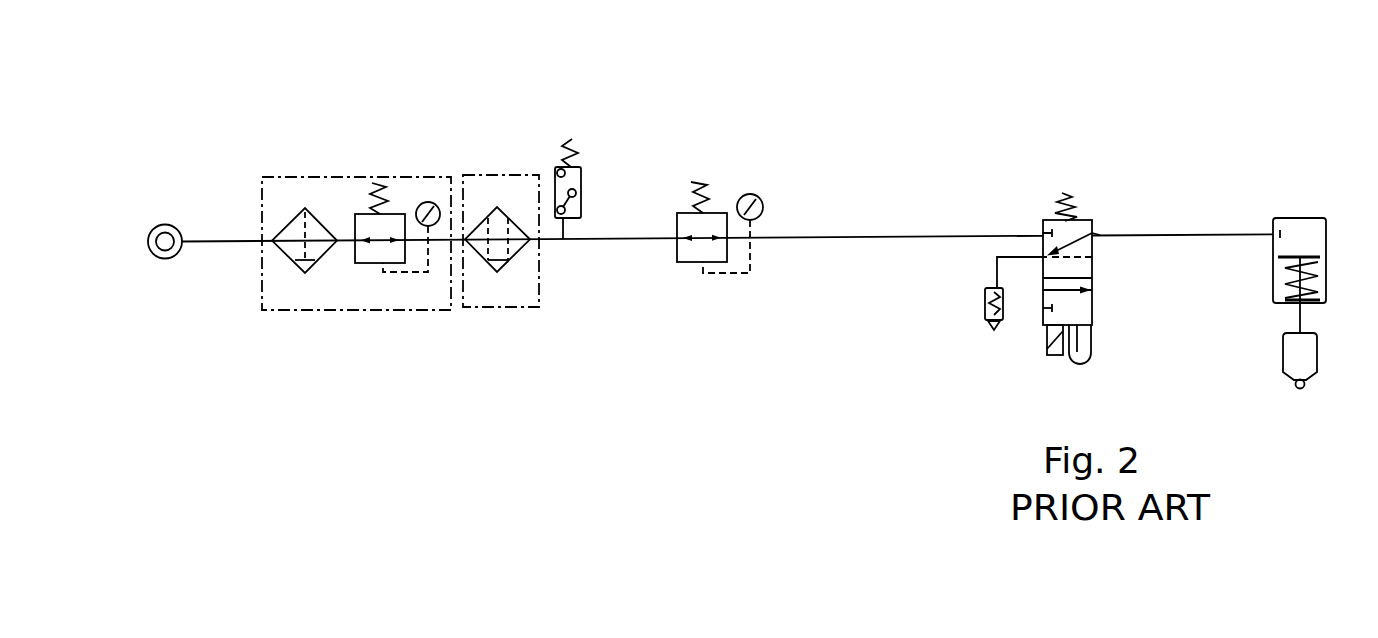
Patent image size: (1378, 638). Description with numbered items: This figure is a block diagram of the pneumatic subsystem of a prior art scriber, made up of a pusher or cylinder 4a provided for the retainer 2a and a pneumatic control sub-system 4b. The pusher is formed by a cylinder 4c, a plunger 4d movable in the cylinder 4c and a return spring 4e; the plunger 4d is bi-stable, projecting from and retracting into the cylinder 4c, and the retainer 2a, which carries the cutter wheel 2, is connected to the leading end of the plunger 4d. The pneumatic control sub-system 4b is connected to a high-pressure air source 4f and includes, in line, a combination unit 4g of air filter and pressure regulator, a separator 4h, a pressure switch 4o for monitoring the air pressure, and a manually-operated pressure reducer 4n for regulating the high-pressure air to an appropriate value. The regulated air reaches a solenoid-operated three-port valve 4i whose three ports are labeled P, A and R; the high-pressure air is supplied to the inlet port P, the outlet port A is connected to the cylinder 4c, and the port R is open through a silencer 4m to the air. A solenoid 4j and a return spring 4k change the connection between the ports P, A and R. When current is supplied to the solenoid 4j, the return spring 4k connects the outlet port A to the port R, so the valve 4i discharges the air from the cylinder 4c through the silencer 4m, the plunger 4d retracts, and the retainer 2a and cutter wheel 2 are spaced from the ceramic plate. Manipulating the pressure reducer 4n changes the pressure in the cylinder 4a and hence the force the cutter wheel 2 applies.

The pneumatic control sub-system 4b is at (1119, 79).
The high-pressure air source 4f is at (172, 224).
The combination unit of air filter and pressure regulator 4g is at (330, 177).
The separator 4h is at (495, 175).
The pressure switch 4o is at (581, 178).
The manually-operated pressure reducer 4n is at (677, 223).
The solenoid-operated three-port valve 4i is at (1097, 213).
The return spring 4k is at (1063, 193).
The inlet port P is at (1043, 233).
The outlet port A is at (1093, 235).
The port R is at (1043, 257).
The silencer 4m is at (985, 300).
The solenoid 4j is at (1054, 356).
The cylinder 4a is at (1277, 236).
The cylinder 4c is at (1287, 218).
The plunger 4d is at (1298, 318).
The return spring 4e is at (1313, 277).
The retainer 2a is at (1312, 379).
The cutter wheel 2 is at (1303, 389).